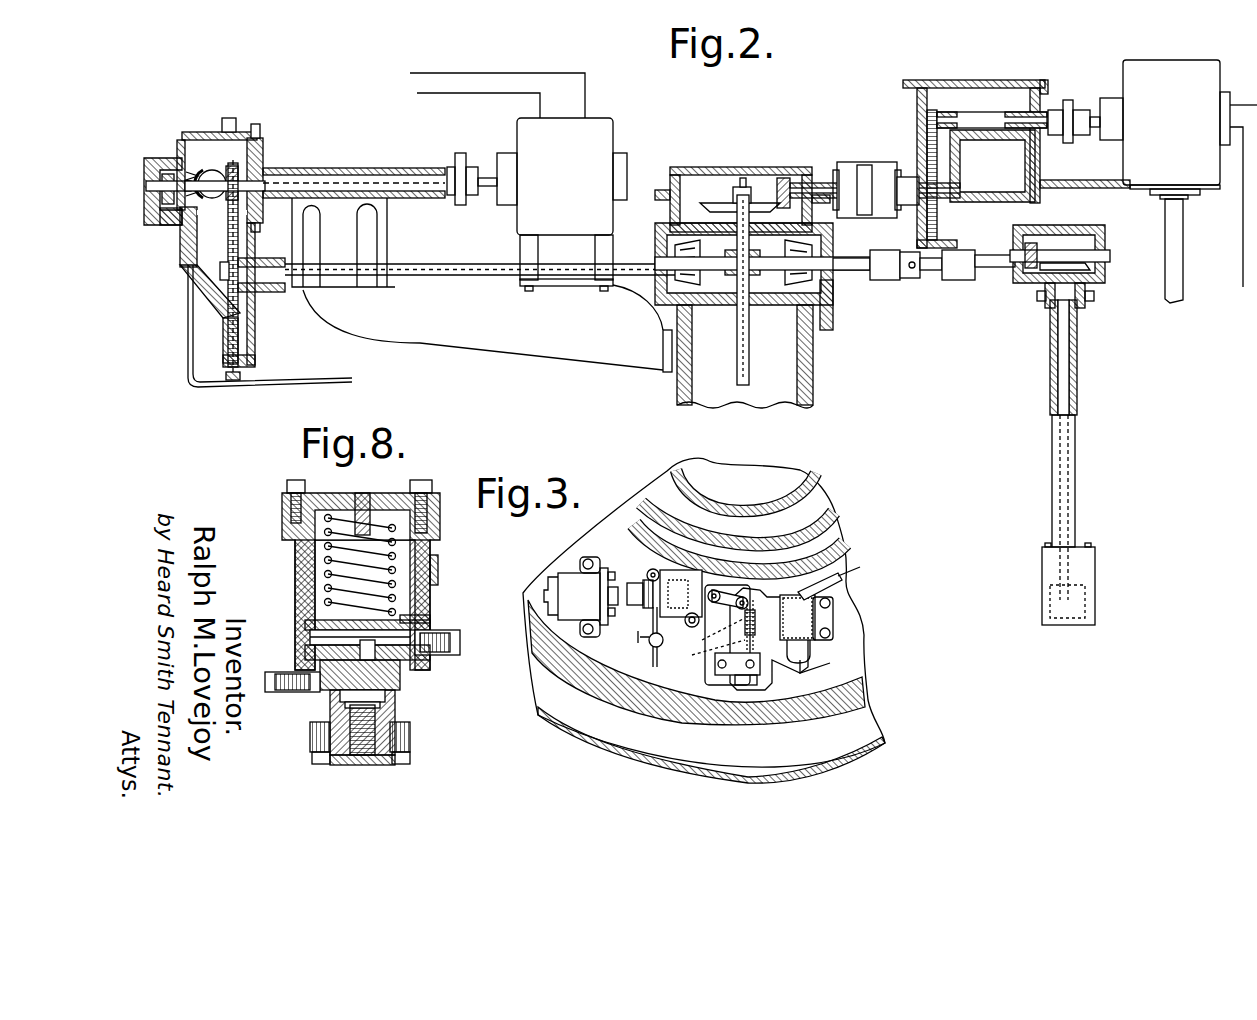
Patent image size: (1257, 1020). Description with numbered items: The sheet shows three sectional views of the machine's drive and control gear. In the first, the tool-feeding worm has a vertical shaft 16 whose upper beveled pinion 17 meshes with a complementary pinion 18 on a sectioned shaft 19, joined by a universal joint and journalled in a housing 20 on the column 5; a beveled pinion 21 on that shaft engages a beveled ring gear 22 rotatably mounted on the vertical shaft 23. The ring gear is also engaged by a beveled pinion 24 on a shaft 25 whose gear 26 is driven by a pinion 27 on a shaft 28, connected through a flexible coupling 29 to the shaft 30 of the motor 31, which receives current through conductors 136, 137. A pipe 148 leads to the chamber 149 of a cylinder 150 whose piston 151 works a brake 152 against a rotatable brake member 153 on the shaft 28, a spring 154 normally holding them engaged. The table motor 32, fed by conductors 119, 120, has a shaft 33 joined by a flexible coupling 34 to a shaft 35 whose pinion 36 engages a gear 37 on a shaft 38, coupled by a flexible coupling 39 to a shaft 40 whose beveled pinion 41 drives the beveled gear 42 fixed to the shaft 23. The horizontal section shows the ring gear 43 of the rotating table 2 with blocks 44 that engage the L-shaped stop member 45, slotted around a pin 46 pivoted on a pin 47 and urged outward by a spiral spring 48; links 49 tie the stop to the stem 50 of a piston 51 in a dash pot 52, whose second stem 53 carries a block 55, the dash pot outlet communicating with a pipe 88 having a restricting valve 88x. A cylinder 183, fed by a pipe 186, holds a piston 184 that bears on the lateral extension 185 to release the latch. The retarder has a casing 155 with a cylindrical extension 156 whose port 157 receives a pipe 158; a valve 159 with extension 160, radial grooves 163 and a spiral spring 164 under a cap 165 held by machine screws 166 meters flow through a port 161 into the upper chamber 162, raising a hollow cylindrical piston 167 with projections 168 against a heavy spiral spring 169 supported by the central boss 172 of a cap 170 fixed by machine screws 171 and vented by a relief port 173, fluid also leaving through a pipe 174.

In FIG. 3, the rotating table 2 is at (834, 518).
In FIG. 2, the column 5 is at (815, 370).
In FIG. 2, the vertical shaft 16 is at (1067, 373).
In FIG. 2, the beveled pinion 17 is at (1085, 280).
In FIG. 2, the complementary pinion 18 is at (1034, 243).
In FIG. 2, the shaft 19 is at (1000, 267).
In FIG. 2, the housing 20 is at (842, 278).
In FIG. 2, the beveled pinion 21 is at (822, 238).
In FIG. 2, the beveled ring gear 22 is at (836, 300).
In FIG. 2, the vertical shaft 23 is at (750, 366).
In FIG. 2, the beveled pinion 24 is at (665, 242).
In FIG. 2, the shaft 25 is at (472, 278).
In FIG. 2, the gear 26 is at (240, 241).
In FIG. 2, the pinion 27 is at (250, 160).
In FIG. 2, the shaft 28 is at (348, 183).
In FIG. 2, the flexible coupling 29 is at (455, 160).
In FIG. 2, the motor shaft 30 is at (487, 176).
In FIG. 2, the motor 31 is at (598, 121).
In FIG. 2, the motor 32 is at (1175, 66).
In FIG. 2, the motor shaft 33 is at (1094, 116).
In FIG. 2, the flexible coupling 34 is at (1068, 100).
In FIG. 2, the shaft 35 is at (980, 120).
In FIG. 2, the pinion 36 is at (934, 118).
In FIG. 2, the gear 37 is at (950, 150).
In FIG. 2, the shaft 38 is at (908, 178).
In FIG. 2, the flexible coupling 39 is at (870, 172).
In FIG. 2, the shaft 40 is at (822, 183).
In FIG. 2, the beveled pinion 41 is at (783, 178).
In FIG. 2, the beveled gear 42 is at (763, 203).
In FIG. 3, the ring gear 43 is at (841, 540).
In FIG. 3, the blocks 44 is at (843, 560).
In FIG. 3, the stop member 45 is at (742, 622).
In FIG. 3, the pin 46 is at (706, 651).
In FIG. 3, the pin 47 is at (742, 665).
In FIG. 3, the spiral spring 48 is at (712, 633).
In FIG. 3, the links 49 is at (735, 590).
In FIG. 3, the piston stem 50 is at (708, 585).
In FIG. 3, the piston 51 is at (690, 560).
In FIG. 3, the dash pot 52 is at (667, 570).
In FIG. 3, the piston stem 53 is at (652, 606).
In FIG. 3, the block 55 is at (635, 580).
In FIG. 3, the pipe 88 is at (655, 667).
In FIG. 3, the restricting valve 88x is at (639, 637).
In FIG. 2, the conductor 119 is at (1244, 105).
In FIG. 2, the conductor 120 is at (1243, 206).
In FIG. 2, the conductor 136 is at (478, 93).
In FIG. 2, the conductor 137 is at (472, 73).
In FIG. 2, the pipe 148 is at (296, 379).
In FIG. 2, the chamber 149 is at (166, 218).
In FIG. 2, the cylinder 150 is at (152, 158).
In FIG. 2, the piston 151 is at (146, 180).
In FIG. 2, the brake 152 is at (206, 170).
In FIG. 2, the rotatable brake member 153 is at (234, 165).
In FIG. 2, the spring 154 is at (192, 170).
In FIG. 8, the casing 155 is at (420, 575).
In FIG. 8, the cylindrical extension 156 is at (400, 688).
In FIG. 8, the port 157 is at (332, 683).
In FIG. 8, the pipe 158 is at (283, 697).
In FIG. 8, the valve 159 is at (397, 703).
In FIG. 8, the valve extension 160 is at (400, 670).
In FIG. 8, the port 161 is at (313, 650).
In FIG. 8, the upper chamber 162 is at (420, 600).
In FIG. 8, the radial grooves 163 is at (412, 622).
In FIG. 8, the spiral spring 164 is at (378, 723).
In FIG. 8, the cap 165 is at (412, 743).
In FIG. 8, the machine screws 166 is at (410, 765).
In FIG. 8, the hollow cylindrical piston 167 is at (433, 560).
In FIG. 8, the projections 168 is at (302, 640).
In FIG. 8, the heavy spiral spring 169 is at (296, 565).
In FIG. 8, the cap 170 is at (383, 490).
In FIG. 8, the machine screws 171 is at (420, 483).
In FIG. 8, the central boss 172 is at (343, 520).
In FIG. 8, the relief port 173 is at (358, 500).
In FIG. 8, the pipe 174 is at (465, 634).
In FIG. 3, the cylinder 183 is at (818, 613).
In FIG. 3, the piston 184 is at (813, 653).
In FIG. 3, the lateral extension 185 is at (813, 677).
In FIG. 3, the pipe 186 is at (812, 583).